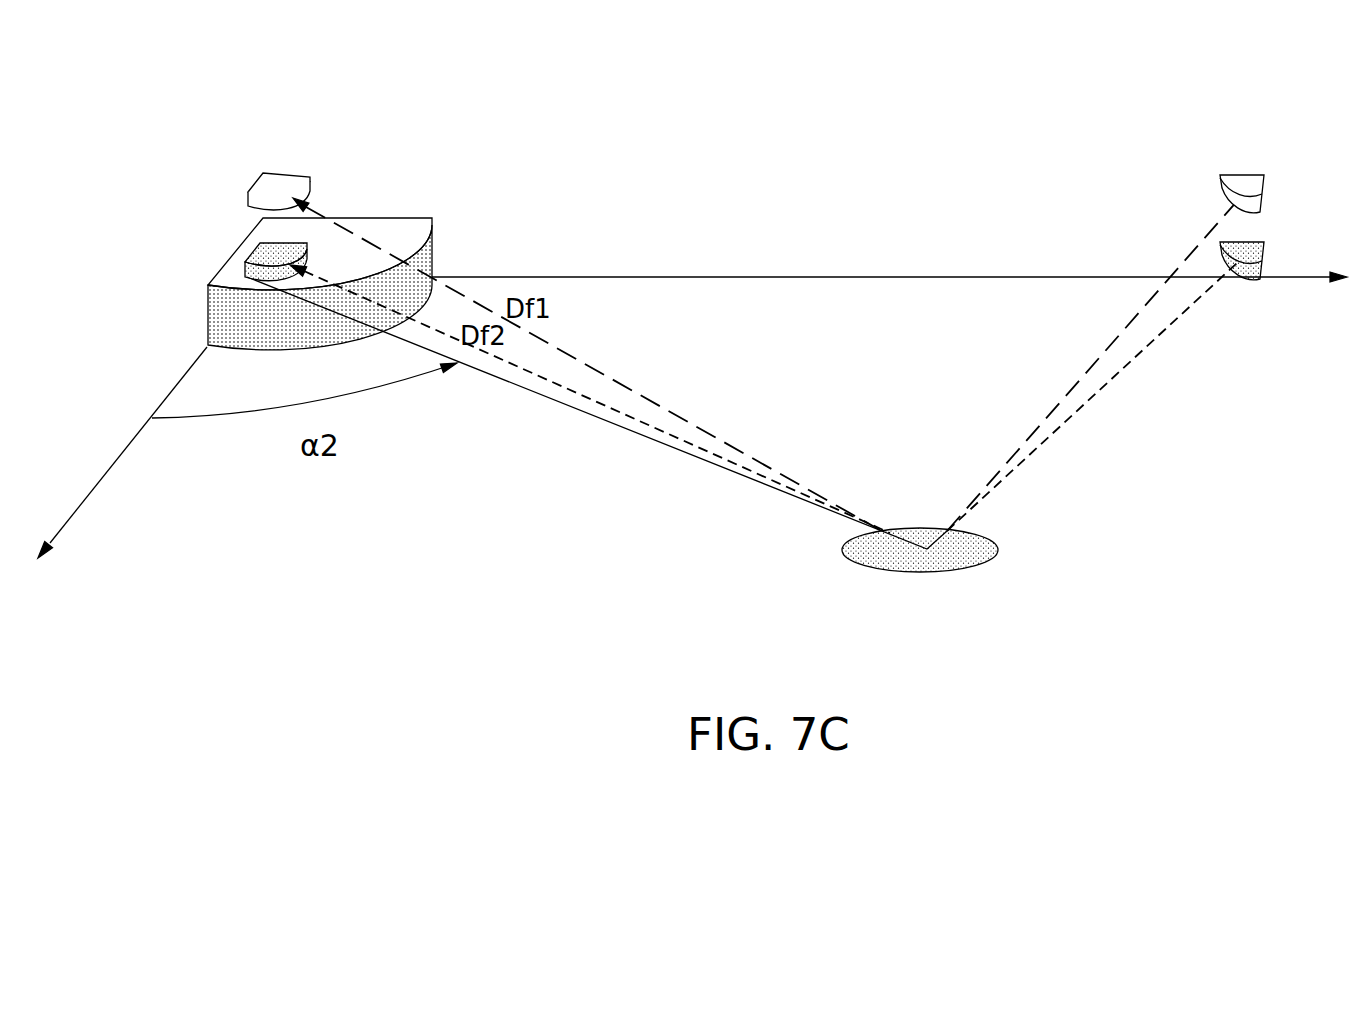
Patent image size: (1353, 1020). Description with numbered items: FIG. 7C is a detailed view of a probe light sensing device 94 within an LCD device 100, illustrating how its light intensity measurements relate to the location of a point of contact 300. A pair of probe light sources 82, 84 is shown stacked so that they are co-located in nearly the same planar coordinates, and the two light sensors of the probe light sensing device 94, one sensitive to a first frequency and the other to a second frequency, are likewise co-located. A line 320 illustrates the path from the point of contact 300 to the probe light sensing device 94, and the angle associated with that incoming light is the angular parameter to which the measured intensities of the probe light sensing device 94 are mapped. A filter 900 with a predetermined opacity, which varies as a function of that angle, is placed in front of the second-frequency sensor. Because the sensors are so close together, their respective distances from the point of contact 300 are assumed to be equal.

The probe light sensing device 94 is at (183, 145).
The filter 900 is at (435, 250).
The line 320 is at (503, 377).
The point of contact 300 is at (920, 567).
The LCD device 100 is at (1092, 365).
The probe light source 82 is at (1269, 178).
The probe light source 84 is at (1269, 277).